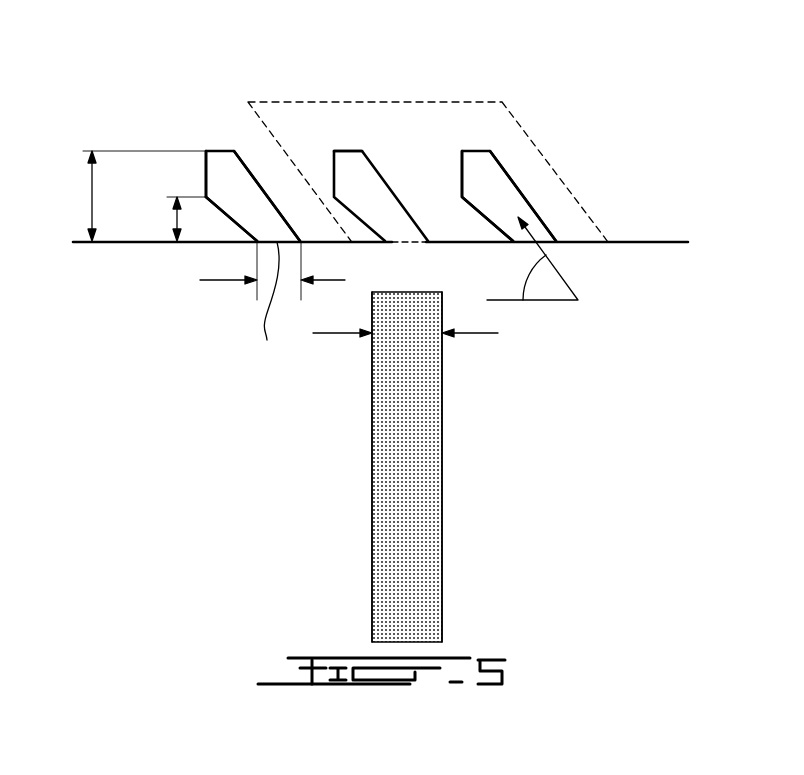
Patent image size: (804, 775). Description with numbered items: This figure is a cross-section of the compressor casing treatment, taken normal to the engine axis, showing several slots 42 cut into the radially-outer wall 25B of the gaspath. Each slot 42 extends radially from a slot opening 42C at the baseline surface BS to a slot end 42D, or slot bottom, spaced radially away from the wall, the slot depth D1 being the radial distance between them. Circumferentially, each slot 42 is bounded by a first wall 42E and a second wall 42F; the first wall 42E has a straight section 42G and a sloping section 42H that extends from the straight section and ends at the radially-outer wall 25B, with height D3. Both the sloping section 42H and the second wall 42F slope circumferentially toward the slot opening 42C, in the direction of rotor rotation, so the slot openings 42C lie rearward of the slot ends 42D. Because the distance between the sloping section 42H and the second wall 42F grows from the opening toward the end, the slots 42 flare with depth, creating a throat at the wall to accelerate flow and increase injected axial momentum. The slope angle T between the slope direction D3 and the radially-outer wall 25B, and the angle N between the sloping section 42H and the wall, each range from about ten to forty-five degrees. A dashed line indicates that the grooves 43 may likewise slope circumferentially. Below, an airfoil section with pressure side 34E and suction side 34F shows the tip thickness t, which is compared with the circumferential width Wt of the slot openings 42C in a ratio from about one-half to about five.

The slots 42 is at (243, 199).
The slot openings 42C is at (266, 307).
The slot ends 42D is at (348, 151).
The first wall 42E is at (466, 205).
The second wall 42F is at (265, 193).
The straight section 42G is at (206, 174).
The sloping section 42H is at (229, 216).
The grooves 43 is at (548, 158).
The radially-outer wall 25B is at (610, 241).
The pressure side 34E is at (372, 539).
The suction side 34F is at (442, 545).
The angle N is at (458, 219).
The baseline surface BS is at (400, 242).
The slot depth D1 is at (134, 196).
The height of the sloping section D3 is at (612, 268).
The circumferential width Wt is at (255, 272).
The slope angle T is at (530, 276).
The thickness t is at (405, 347).